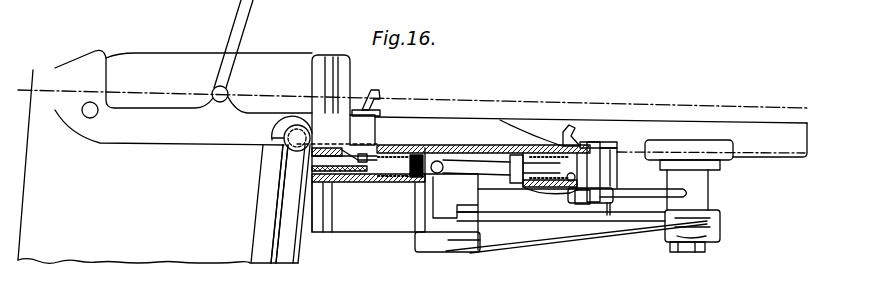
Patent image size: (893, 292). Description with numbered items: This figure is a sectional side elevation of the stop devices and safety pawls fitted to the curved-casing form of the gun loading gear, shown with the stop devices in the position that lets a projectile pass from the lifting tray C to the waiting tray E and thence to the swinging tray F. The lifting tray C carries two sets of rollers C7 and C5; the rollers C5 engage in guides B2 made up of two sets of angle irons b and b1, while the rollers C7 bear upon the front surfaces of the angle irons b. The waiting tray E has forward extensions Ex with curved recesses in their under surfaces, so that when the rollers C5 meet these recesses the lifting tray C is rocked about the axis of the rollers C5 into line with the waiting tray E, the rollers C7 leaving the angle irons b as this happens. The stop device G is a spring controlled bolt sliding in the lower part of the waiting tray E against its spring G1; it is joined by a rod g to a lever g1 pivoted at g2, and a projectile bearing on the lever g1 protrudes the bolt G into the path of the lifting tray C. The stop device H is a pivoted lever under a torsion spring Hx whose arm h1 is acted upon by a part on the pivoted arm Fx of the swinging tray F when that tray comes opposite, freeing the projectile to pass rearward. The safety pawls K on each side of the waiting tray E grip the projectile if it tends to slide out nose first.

The lifting tray C is at (153, 125).
The rollers C7 is at (88, 118).
The rollers C5 is at (287, 148).
The guides B2 is at (290, 252).
The angle irons b is at (267, 257).
The angle irons b1 is at (287, 247).
The forward extensions Ex is at (313, 125).
The safety pawls K is at (368, 90).
The waiting tray E is at (412, 130).
The stop device G is at (355, 181).
The spring G1 is at (423, 147).
The rod g is at (465, 165).
The torsion spring Hx is at (543, 143).
The pivot g2 is at (563, 125).
The lever g1 is at (578, 118).
The stop device H is at (594, 160).
The arm h1 is at (580, 204).
The swinging tray F is at (628, 135).
The pivoted arm Fx is at (623, 205).